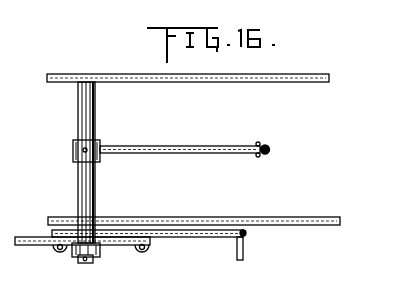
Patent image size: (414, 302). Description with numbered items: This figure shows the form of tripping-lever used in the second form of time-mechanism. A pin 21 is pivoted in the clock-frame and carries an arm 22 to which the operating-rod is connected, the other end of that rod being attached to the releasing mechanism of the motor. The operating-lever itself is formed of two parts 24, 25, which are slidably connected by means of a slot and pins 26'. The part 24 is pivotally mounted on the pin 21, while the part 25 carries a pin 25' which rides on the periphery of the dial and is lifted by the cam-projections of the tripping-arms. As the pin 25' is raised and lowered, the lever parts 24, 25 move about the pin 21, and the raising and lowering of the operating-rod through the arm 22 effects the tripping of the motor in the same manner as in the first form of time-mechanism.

The pin 21 is at (84, 105).
The arm 22 is at (154, 148).
The part of operating-lever 24 is at (36, 244).
The part of operating-lever 25 is at (147, 252).
The pin 25' is at (264, 251).
The pins 26' is at (106, 269).